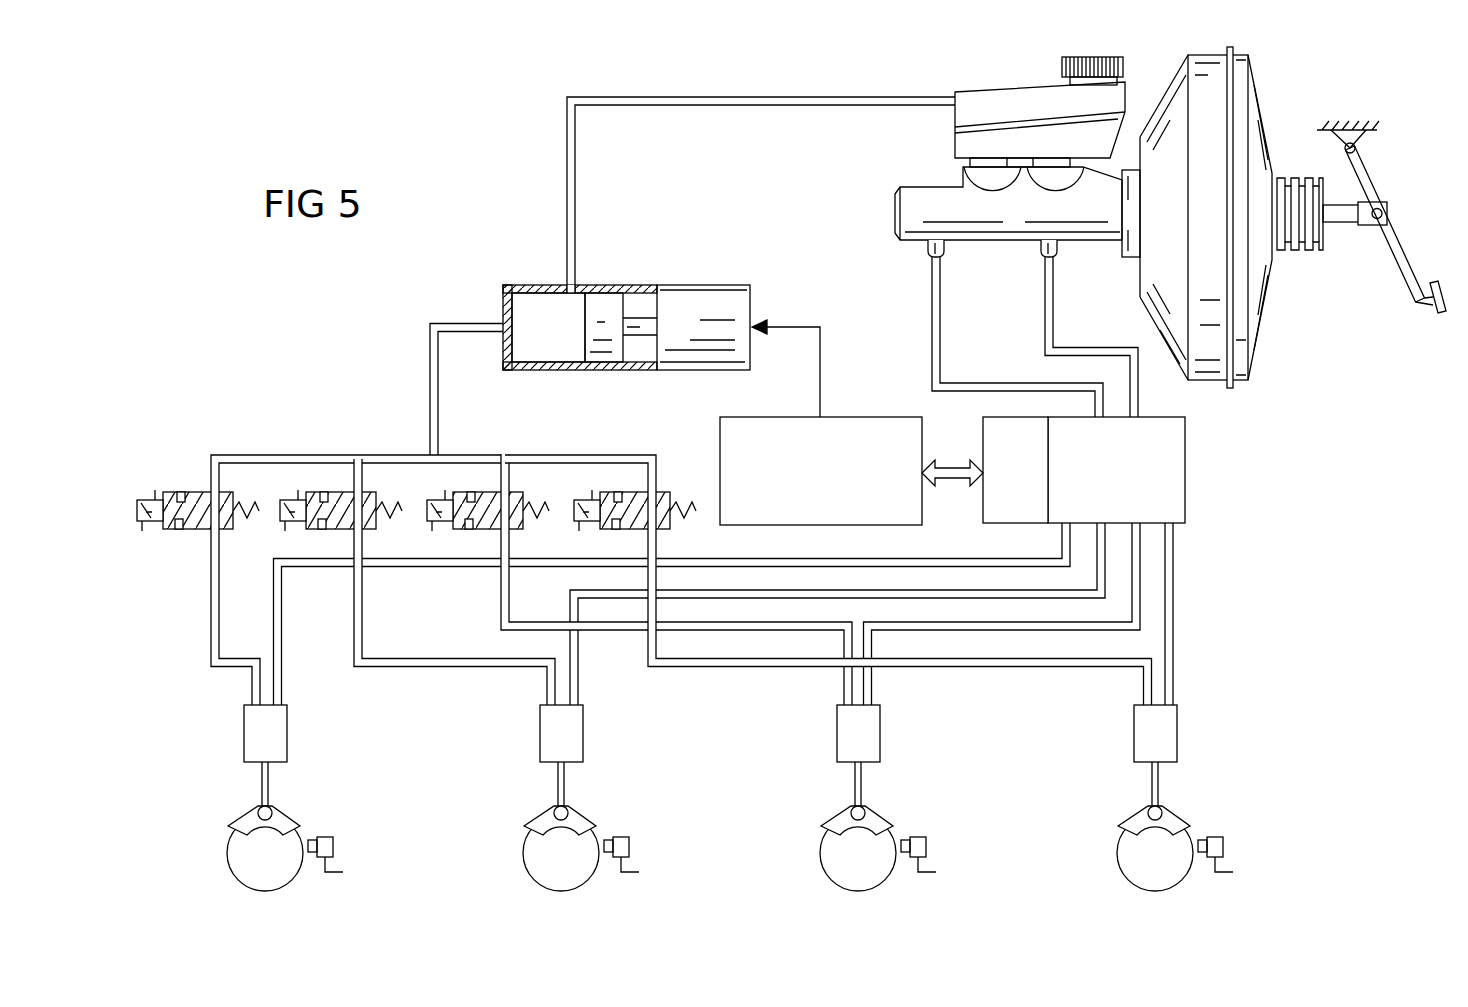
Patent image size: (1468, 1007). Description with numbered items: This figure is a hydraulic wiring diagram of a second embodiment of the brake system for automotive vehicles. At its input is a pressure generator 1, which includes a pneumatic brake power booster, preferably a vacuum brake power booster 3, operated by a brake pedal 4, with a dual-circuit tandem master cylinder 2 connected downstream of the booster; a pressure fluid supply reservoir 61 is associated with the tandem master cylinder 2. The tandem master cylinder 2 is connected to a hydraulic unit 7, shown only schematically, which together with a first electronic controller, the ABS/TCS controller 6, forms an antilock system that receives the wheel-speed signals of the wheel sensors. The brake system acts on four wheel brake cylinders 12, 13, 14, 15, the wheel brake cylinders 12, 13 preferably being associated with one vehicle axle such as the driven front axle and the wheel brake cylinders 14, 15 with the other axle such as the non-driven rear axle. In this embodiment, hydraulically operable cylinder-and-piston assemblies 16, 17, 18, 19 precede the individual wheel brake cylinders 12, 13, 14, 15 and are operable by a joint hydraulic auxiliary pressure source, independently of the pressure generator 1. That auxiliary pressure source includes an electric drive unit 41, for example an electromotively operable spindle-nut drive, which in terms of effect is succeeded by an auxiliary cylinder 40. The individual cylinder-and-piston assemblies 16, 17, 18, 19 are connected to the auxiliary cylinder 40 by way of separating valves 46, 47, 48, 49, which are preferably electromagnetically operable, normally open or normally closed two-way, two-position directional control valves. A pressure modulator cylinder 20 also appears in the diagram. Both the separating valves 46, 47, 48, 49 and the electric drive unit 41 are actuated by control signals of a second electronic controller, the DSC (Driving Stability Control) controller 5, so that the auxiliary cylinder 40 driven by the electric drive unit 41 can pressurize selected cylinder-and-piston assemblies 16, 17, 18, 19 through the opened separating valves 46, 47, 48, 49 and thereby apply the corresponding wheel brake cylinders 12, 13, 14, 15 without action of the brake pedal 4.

The pressure generator 1 is at (1288, 118).
The tandem master cylinder 2 is at (918, 198).
The vacuum brake power booster 3 is at (1255, 288).
The brake pedal 4 is at (1393, 247).
The DSC controller 5 is at (698, 422).
The ABS/TCS controller 6 is at (995, 442).
The hydraulic unit 7 is at (1170, 452).
The wheel brake cylinder 12 is at (272, 812).
The wheel brake cylinder 13 is at (568, 812).
The wheel brake cylinder 14 is at (865, 812).
The wheel brake cylinder 15 is at (1162, 812).
The cylinder-and-piston assembly 16 is at (253, 738).
The cylinder-and-piston assembly 17 is at (548, 738).
The cylinder-and-piston assembly 18 is at (845, 738).
The cylinder-and-piston assembly 19 is at (1141, 738).
The pressure modulator cylinder 20 is at (694, 280).
The auxiliary cylinder 40 is at (558, 350).
The electric drive unit 41 is at (703, 300).
The separating valve 46 is at (192, 492).
The separating valve 47 is at (330, 492).
The separating valve 48 is at (484, 492).
The separating valve 49 is at (628, 492).
The pressure fluid supply reservoir 61 is at (998, 102).